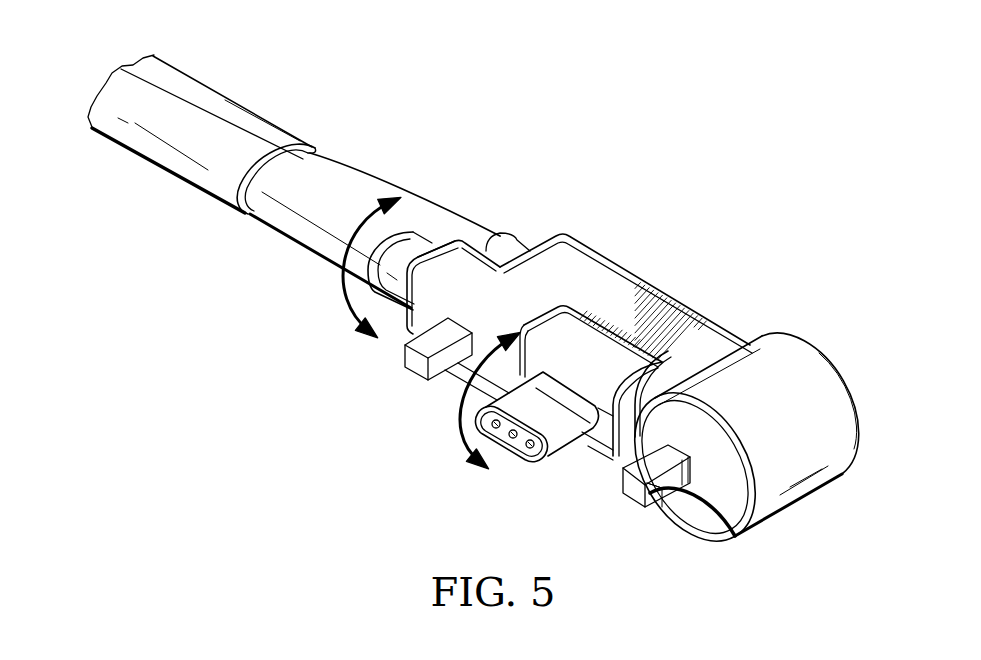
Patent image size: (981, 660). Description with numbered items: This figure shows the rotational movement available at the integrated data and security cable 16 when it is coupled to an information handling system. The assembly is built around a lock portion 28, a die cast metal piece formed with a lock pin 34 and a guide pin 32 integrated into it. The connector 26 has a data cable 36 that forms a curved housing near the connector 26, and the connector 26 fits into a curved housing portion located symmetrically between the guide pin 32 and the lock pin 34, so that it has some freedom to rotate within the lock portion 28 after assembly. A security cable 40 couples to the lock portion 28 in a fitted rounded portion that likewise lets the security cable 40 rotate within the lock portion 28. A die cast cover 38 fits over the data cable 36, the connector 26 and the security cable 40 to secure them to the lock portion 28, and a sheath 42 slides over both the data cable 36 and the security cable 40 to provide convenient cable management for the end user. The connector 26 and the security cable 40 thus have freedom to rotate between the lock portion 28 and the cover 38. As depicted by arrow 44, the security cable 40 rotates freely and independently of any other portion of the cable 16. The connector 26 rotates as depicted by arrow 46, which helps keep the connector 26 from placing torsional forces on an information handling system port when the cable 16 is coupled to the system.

The integrated data and security cable 16 is at (551, 124).
The connector 26 is at (514, 447).
The lock portion 28 is at (797, 510).
The guide pin 32 is at (408, 372).
The lock pin 34 is at (637, 490).
The data cable 36 is at (355, 170).
The cover 38 is at (587, 267).
The security cable 40 is at (273, 228).
The sheath 42 is at (202, 97).
The arrow 44 is at (338, 306).
The arrow 46 is at (457, 427).